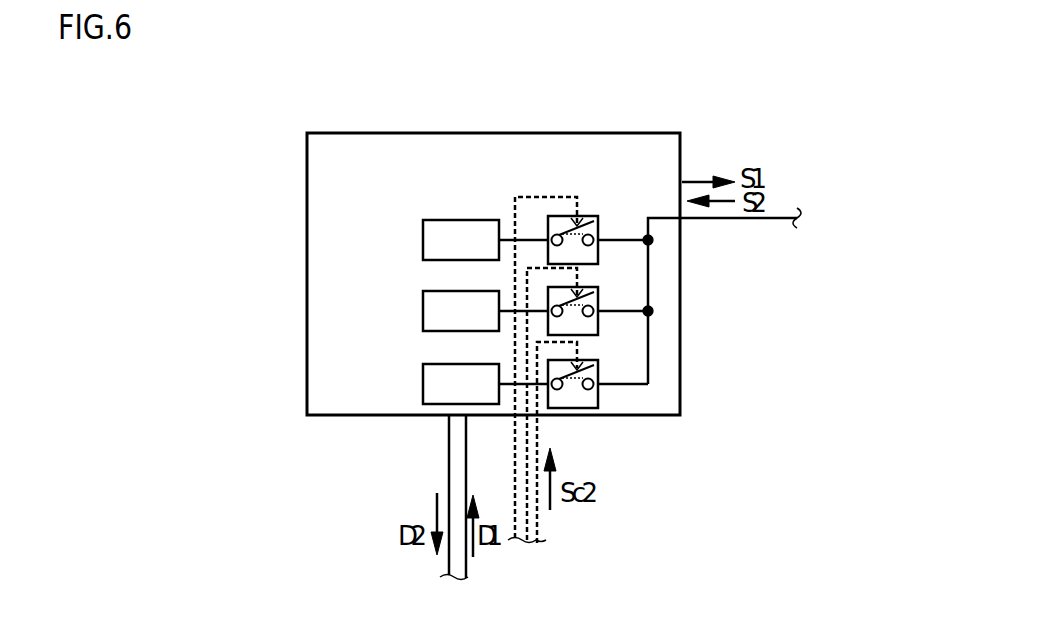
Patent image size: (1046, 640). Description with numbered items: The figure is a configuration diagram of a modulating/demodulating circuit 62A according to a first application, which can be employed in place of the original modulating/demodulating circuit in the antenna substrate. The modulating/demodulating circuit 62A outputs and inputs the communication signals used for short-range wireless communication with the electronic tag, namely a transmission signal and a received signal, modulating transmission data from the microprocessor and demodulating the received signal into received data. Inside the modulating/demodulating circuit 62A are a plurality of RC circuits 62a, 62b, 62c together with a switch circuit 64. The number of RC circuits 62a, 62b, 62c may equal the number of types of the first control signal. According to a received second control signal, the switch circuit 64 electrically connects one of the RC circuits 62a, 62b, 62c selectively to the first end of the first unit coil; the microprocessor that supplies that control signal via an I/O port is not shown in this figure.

The modulating/demodulating circuit 62A is at (593, 133).
The RC circuit 62a is at (423, 392).
The RC circuit 62b is at (423, 313).
The RC circuit 62c is at (423, 243).
The switch circuit 64 is at (615, 404).